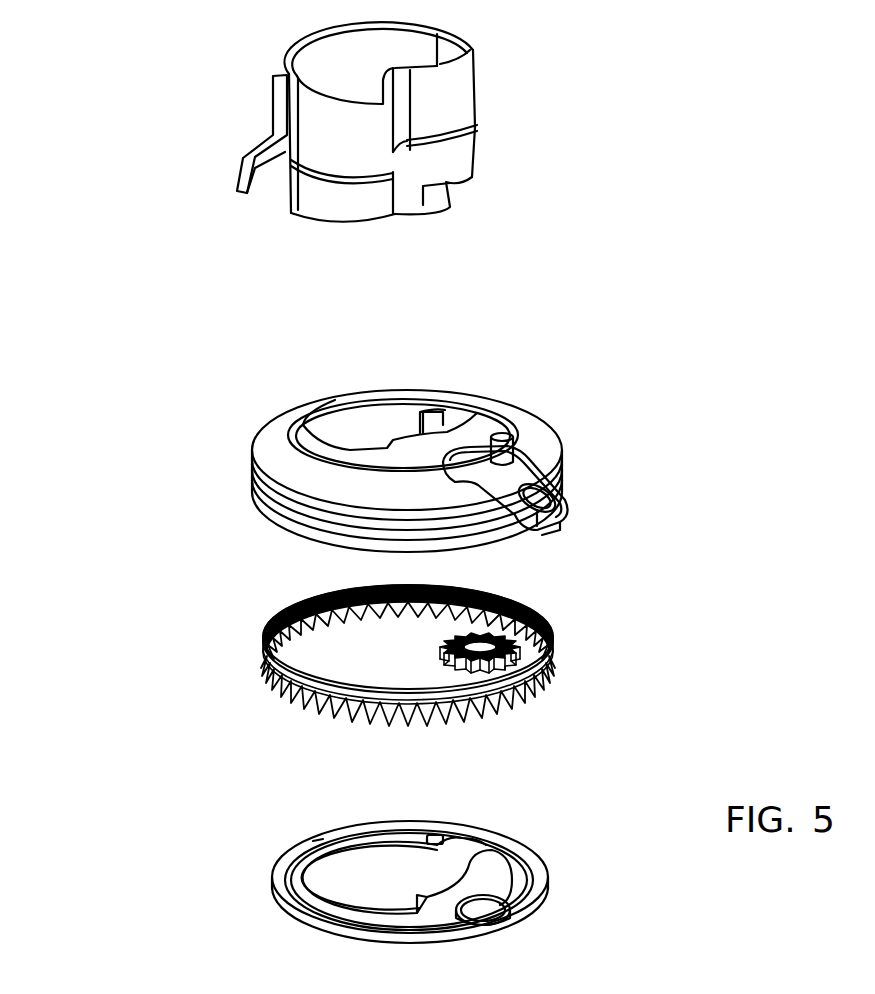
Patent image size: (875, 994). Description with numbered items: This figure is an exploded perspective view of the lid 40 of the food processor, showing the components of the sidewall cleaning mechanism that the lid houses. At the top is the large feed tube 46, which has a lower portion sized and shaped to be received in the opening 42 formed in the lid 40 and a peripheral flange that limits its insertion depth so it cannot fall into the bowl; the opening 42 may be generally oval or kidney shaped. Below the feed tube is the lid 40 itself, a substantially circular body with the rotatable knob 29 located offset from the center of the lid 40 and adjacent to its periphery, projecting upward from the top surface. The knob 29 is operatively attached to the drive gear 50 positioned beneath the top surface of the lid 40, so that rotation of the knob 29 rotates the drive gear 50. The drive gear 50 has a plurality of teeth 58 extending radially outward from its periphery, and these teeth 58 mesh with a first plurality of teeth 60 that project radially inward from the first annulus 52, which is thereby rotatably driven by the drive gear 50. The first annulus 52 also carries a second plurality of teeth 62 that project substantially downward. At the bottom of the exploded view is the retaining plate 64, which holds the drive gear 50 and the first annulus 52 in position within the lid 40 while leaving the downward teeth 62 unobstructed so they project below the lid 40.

The rotatable knob 29 is at (520, 445).
The lid 40 is at (558, 403).
The opening 42 is at (353, 453).
The large feed tube 46 is at (467, 93).
The drive gear 50 is at (520, 610).
The first annulus 52 is at (394, 661).
The teeth 58 is at (450, 658).
The first plurality of teeth 60 is at (312, 673).
The second plurality of teeth 62 is at (300, 700).
The retaining plate 64 is at (245, 885).